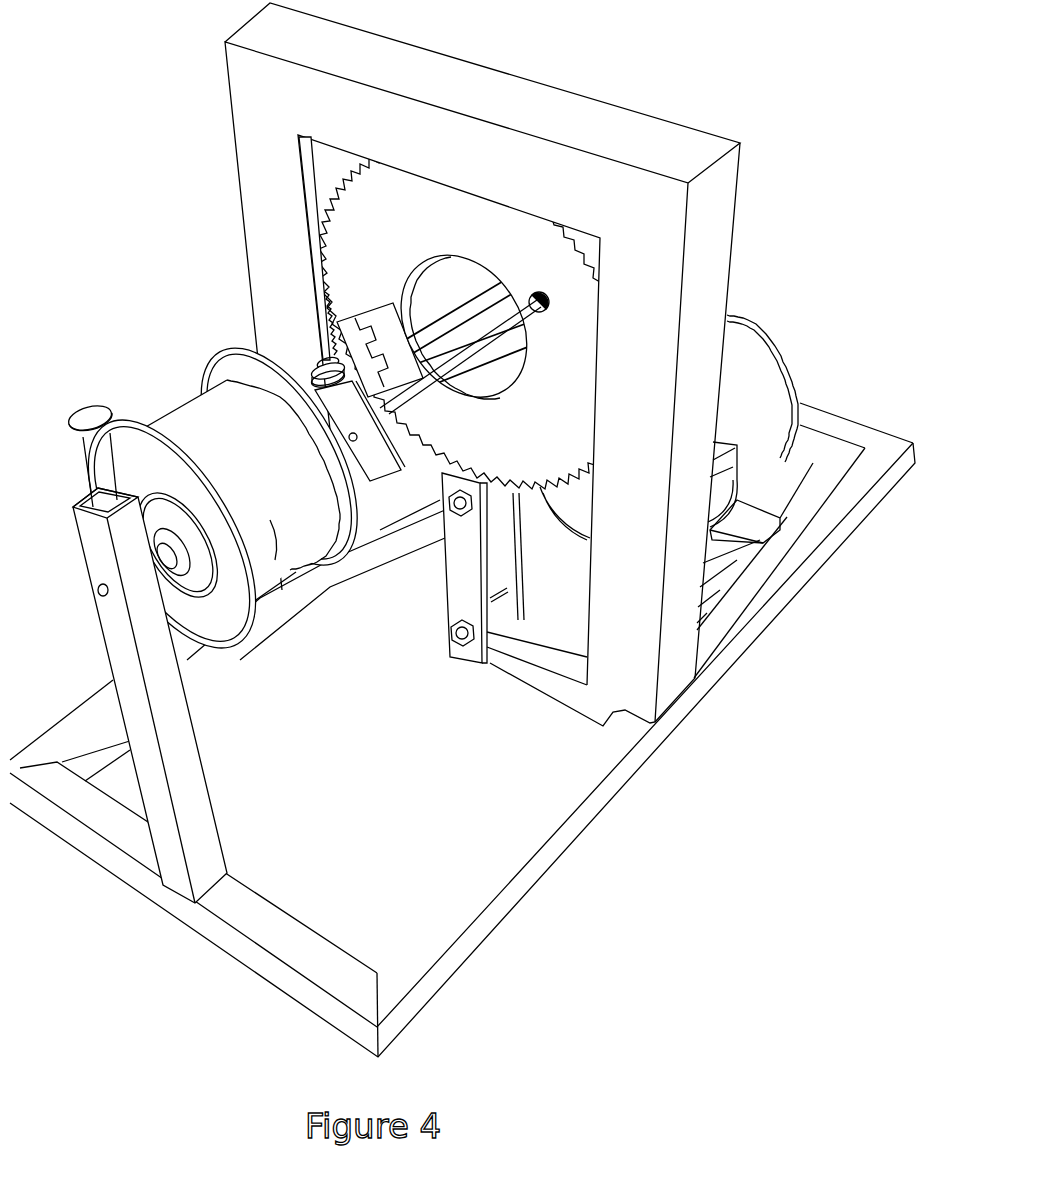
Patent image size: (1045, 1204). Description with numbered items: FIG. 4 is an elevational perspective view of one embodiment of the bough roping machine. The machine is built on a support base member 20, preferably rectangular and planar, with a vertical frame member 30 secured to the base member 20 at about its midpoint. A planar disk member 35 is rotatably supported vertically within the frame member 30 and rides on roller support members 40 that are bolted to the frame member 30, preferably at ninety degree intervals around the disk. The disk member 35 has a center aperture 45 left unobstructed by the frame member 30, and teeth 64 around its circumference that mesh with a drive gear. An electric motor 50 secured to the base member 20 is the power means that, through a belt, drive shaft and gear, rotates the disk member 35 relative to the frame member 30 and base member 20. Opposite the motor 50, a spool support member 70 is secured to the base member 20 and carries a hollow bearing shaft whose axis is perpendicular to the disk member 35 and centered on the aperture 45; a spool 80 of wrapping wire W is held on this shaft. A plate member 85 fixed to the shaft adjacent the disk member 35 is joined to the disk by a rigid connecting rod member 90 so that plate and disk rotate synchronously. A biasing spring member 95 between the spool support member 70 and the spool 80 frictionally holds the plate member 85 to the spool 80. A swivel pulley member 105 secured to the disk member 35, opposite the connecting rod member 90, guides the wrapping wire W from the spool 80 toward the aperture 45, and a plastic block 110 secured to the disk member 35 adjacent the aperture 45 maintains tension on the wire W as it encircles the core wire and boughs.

The support base member 20 is at (560, 803).
The vertical frame member 30 is at (527, 181).
The planar disk member 35 is at (550, 360).
The roller support members 40 is at (520, 495).
The center aperture 45 is at (410, 278).
The electric motor 50 is at (745, 370).
The teeth 64 is at (586, 237).
The spool support member 70 is at (193, 808).
The spool 80 is at (127, 453).
The plate member 85 is at (377, 463).
The rigid connecting rod member 90 is at (400, 407).
The biasing spring member 95 is at (180, 560).
The swivel pulley member 105 is at (338, 343).
The plastic block 110 is at (316, 278).
The wrapping wire W is at (277, 532).